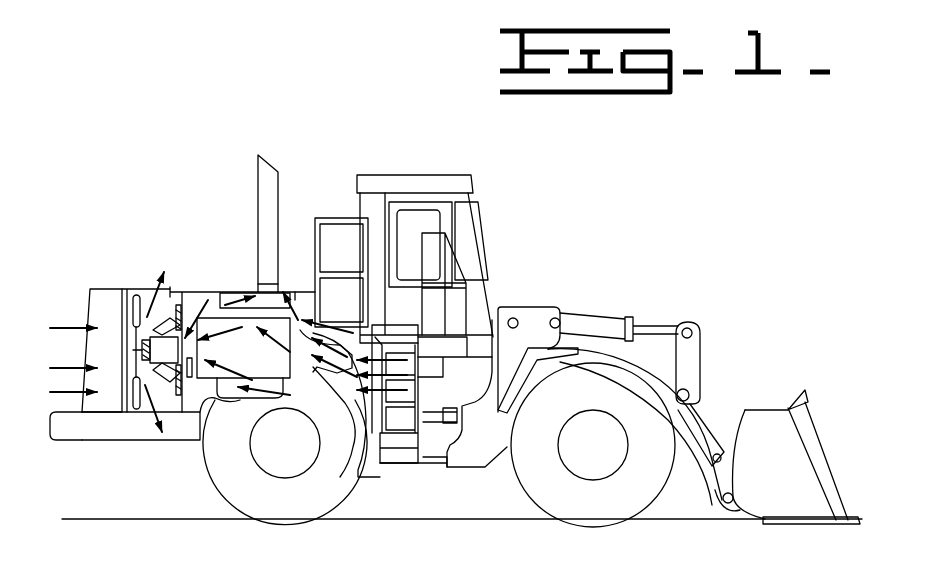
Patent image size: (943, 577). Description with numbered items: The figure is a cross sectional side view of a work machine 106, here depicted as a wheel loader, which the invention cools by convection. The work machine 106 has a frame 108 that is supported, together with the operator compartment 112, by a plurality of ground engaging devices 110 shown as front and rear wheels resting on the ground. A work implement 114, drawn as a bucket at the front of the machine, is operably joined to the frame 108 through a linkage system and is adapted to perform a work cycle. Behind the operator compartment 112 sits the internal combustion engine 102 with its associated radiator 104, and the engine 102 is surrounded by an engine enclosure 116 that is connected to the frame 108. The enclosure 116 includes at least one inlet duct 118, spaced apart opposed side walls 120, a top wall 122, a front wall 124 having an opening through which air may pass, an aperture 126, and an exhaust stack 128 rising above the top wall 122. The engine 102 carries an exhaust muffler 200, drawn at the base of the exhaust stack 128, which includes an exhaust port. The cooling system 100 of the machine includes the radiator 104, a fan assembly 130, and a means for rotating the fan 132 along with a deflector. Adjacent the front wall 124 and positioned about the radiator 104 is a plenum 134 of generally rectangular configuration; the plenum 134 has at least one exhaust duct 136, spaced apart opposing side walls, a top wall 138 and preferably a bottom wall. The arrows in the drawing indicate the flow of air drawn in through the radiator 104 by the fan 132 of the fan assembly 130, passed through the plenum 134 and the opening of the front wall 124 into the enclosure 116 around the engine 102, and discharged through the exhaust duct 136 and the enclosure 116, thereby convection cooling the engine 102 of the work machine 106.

The cooling system 100 is at (87, 288).
The internal combustion engine 102 is at (262, 359).
The radiator 104 is at (122, 373).
The work machine 106 is at (509, 202).
The frame 108 is at (476, 442).
The ground engaging devices 110 is at (306, 507).
The operator compartment 112 is at (414, 182).
The work implement 114 is at (758, 430).
The engine enclosure 116 is at (184, 288).
The inlet duct 118 is at (352, 308).
The side walls 120 is at (330, 403).
The top wall 122 is at (246, 292).
The front wall 124 is at (193, 290).
The aperture 126 is at (292, 284).
The exhaust stack 128 is at (277, 183).
The fan assembly 130 is at (135, 289).
The fan 132 is at (132, 318).
The plenum 134 is at (92, 410).
The exhaust duct 136 is at (140, 292).
The top wall 138 is at (114, 290).
The exhaust muffler 200 is at (258, 288).